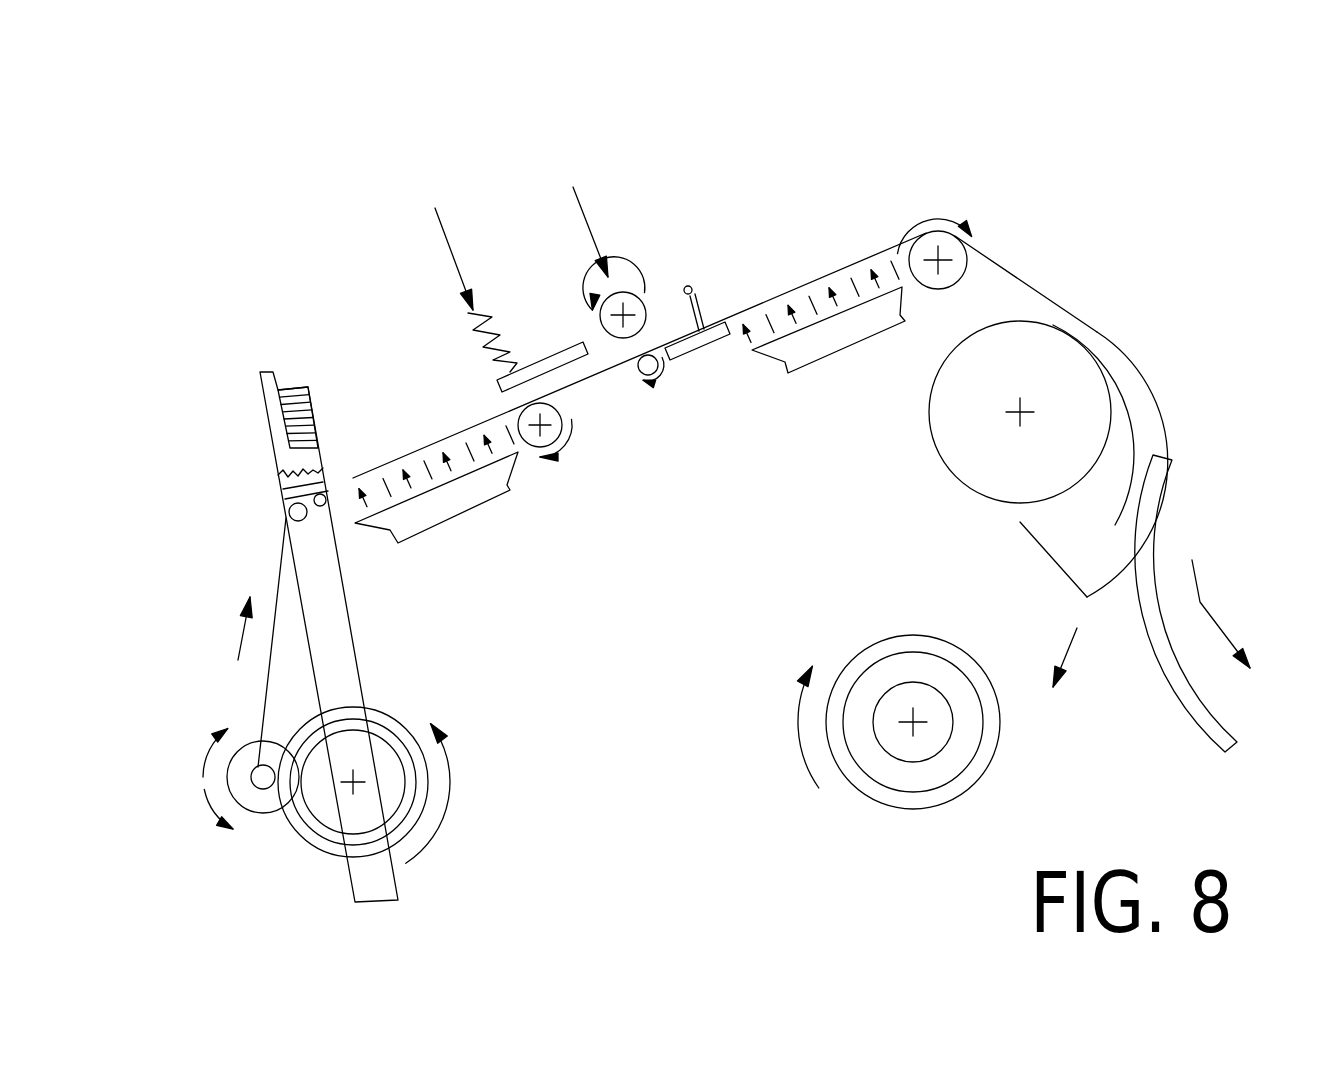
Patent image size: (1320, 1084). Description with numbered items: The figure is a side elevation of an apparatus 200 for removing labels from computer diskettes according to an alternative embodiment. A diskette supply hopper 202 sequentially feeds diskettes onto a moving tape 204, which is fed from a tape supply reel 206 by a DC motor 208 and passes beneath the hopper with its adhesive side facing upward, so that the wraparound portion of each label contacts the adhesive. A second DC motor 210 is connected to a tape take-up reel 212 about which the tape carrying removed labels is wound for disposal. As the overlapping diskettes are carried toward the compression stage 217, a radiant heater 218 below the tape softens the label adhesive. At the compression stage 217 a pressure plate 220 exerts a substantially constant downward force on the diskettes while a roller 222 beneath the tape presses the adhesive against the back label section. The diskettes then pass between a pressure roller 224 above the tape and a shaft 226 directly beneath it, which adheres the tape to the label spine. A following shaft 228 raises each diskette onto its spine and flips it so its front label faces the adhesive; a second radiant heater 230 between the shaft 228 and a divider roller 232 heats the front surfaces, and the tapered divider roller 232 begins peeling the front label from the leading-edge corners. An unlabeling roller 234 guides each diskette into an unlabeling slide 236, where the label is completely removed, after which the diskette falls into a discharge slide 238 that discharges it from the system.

The apparatus 200 is at (405, 157).
The diskette supply hopper 202 is at (318, 571).
The tape 204 is at (633, 355).
The tape supply reel 206 is at (453, 786).
The DC motor 208 is at (259, 833).
The second DC motor 210 is at (898, 674).
The tape take-up reel 212 is at (868, 794).
The compression stage 217 is at (425, 281).
The radiant heater 218 is at (444, 539).
The pressure plate 220 is at (534, 255).
The roller 222 is at (556, 501).
The pressure roller 224 is at (666, 227).
The shaft 226 is at (655, 455).
The shaft 228 is at (737, 263).
The second radiant heater 230 is at (868, 229).
The divider roller 232 is at (994, 211).
The unlabeling roller 234 is at (1056, 434).
The unlabeling slide 236 is at (1116, 484).
The discharge slide 238 is at (1156, 643).